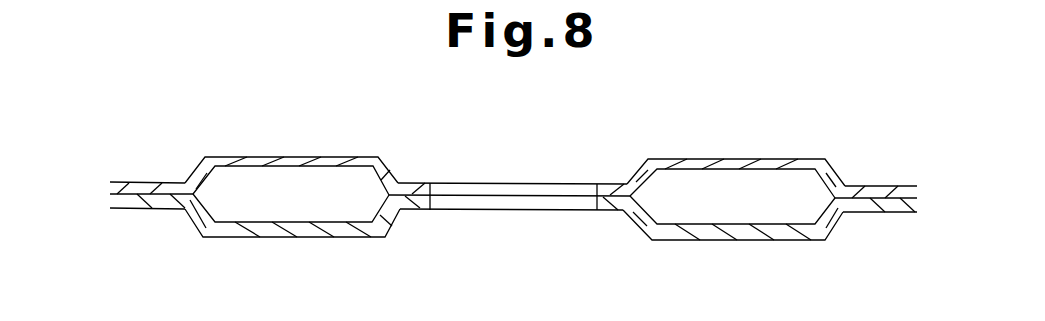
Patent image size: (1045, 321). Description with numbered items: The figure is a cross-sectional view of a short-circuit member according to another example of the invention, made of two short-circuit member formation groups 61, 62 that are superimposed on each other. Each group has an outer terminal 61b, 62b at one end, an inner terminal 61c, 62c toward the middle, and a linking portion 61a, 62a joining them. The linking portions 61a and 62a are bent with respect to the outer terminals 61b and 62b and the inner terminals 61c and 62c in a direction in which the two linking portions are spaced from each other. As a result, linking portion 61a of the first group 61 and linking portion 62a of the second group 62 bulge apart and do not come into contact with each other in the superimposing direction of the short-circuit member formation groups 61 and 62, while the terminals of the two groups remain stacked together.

The short-circuit member formation group 61 is at (475, 157).
The linking portion 61a is at (290, 162).
The outer terminal 61b is at (143, 188).
The inner terminal 61c is at (414, 190).
The short-circuit member formation group 62 is at (476, 242).
The linking portion 62a is at (310, 233).
The outer terminal 62b is at (167, 206).
The inner terminal 62c is at (420, 210).